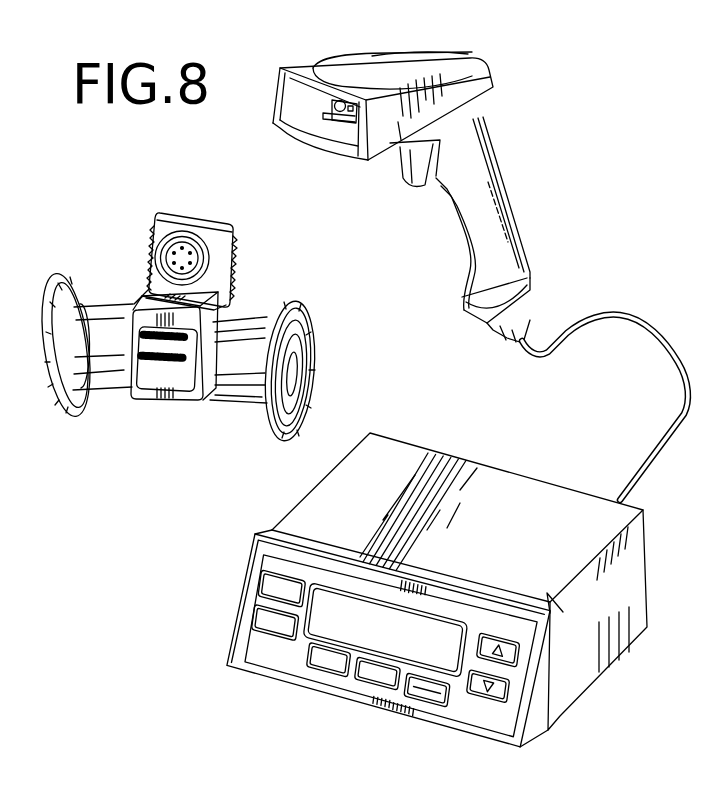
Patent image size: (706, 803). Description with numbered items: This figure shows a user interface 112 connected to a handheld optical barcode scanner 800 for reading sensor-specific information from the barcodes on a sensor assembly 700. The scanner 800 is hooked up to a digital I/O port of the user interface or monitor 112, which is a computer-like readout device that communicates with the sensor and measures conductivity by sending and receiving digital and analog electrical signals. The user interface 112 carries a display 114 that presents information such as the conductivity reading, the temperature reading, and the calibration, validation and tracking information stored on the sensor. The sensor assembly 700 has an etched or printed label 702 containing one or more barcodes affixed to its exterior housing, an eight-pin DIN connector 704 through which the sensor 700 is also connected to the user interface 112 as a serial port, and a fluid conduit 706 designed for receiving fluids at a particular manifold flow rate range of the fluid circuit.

The handheld optical barcode scanner 800 is at (522, 181).
The sensor assembly 700 is at (176, 199).
The label 702 is at (140, 378).
The 8-Pin DIN connector 704 is at (194, 256).
The fluid conduit 706 is at (80, 335).
The user interface 112 is at (411, 591).
The display 114 is at (438, 654).